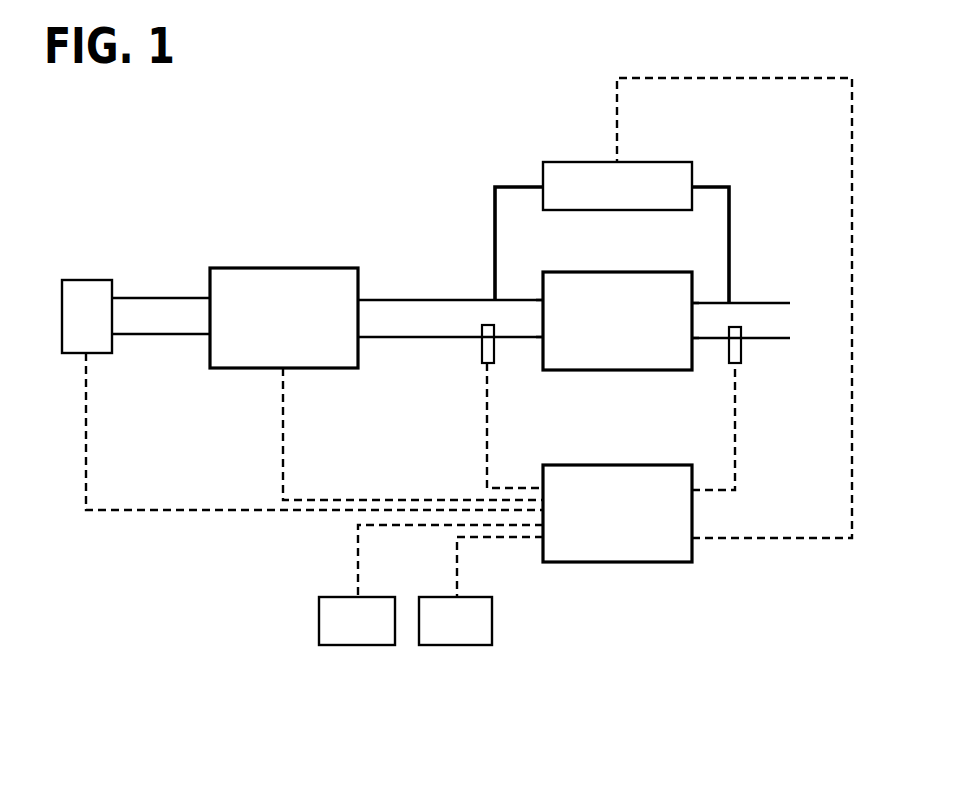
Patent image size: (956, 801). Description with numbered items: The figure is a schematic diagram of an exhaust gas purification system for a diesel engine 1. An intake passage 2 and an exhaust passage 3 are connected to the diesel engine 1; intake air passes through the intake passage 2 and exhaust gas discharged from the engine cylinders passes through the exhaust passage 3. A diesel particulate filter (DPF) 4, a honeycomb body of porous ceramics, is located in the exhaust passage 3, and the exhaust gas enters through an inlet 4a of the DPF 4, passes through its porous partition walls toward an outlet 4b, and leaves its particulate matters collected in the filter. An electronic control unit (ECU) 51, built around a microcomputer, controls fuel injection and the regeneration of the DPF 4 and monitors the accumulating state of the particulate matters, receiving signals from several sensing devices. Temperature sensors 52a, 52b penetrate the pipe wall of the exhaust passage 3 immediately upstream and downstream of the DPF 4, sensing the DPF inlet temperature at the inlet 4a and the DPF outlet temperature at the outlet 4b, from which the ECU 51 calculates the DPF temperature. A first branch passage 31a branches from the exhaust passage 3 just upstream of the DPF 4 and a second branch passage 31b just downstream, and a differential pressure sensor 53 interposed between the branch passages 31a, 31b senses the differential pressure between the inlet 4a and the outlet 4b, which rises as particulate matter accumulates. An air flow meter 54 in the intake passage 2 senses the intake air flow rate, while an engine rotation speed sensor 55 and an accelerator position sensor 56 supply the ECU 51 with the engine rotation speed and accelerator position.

The diesel engine 1 is at (288, 268).
The intake passage 2 is at (152, 298).
The exhaust passage 3 is at (424, 300).
The diesel particulate filter (DPF) 4 is at (632, 370).
The inlet 4a is at (542, 322).
The outlet 4b is at (693, 320).
The first branch passage 31a is at (520, 187).
The second branch passage 31b is at (727, 187).
The electronic control unit (ECU) 51 is at (633, 562).
The temperature sensor 52a is at (480, 350).
The temperature sensor 52b is at (743, 350).
The differential pressure sensor 53 is at (580, 162).
The air flow meter 54 is at (87, 280).
The engine rotation speed sensor 55 is at (352, 645).
The accelerator position sensor 56 is at (453, 645).